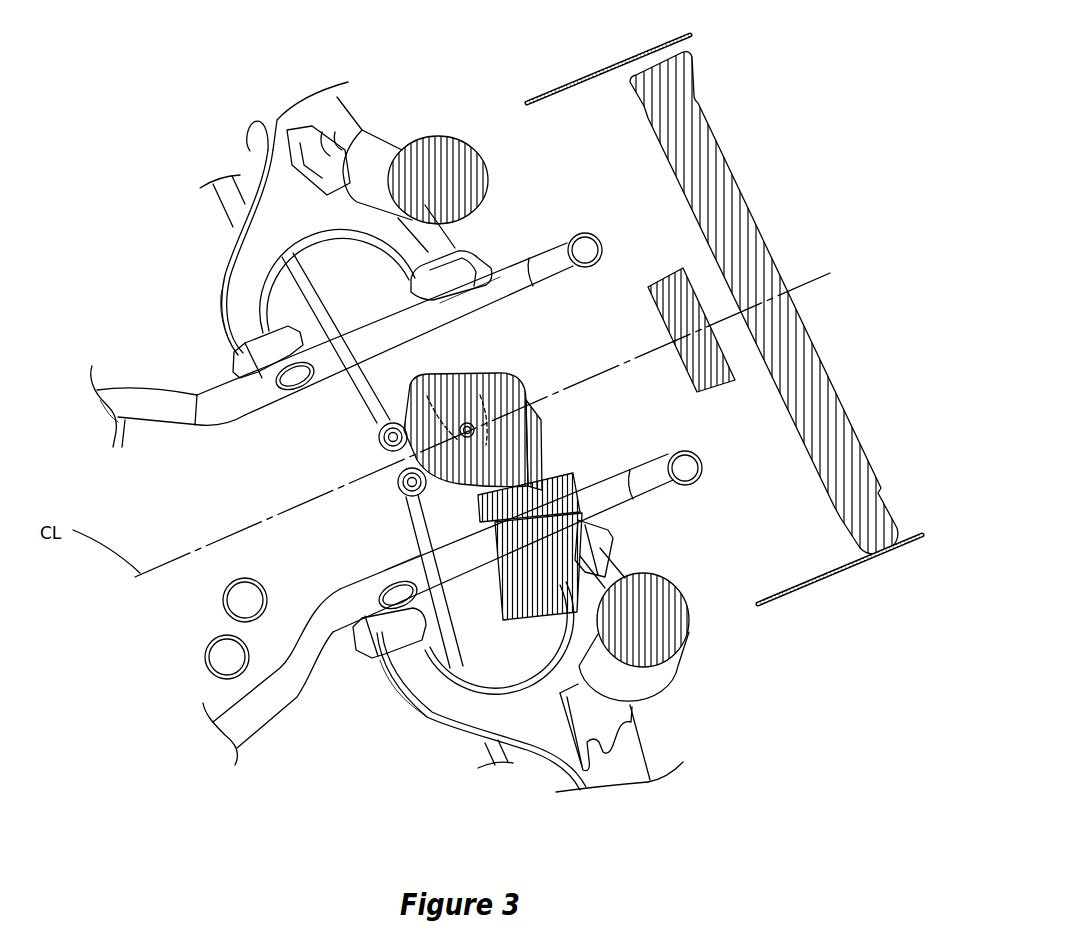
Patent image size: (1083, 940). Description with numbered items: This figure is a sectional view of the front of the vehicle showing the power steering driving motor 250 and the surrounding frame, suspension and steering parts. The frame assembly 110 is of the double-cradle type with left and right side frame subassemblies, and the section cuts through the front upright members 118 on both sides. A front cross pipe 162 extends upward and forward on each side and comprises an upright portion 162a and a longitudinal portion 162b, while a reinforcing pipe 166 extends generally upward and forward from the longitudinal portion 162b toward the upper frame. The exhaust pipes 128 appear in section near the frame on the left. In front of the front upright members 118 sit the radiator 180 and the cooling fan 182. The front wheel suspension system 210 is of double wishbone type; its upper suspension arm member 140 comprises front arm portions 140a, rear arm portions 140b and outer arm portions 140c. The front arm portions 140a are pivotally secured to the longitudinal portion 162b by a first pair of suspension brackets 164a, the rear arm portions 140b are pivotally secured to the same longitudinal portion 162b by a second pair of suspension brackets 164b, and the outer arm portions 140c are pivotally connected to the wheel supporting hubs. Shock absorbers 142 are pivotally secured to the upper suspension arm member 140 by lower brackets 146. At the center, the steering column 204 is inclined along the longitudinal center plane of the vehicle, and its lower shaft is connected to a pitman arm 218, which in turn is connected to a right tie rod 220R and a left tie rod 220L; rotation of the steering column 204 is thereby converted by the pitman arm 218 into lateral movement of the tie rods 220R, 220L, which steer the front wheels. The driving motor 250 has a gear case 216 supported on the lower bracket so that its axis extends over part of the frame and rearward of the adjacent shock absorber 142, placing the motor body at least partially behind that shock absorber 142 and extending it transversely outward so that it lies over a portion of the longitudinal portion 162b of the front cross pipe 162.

The frame assembly 110 is at (145, 372).
The front upright member 118 is at (585, 268).
The exhaust pipes 128 is at (206, 652).
The upper suspension arm member 140 is at (222, 225).
The front arm portions 140a is at (452, 240).
The rear arm portions 140b is at (222, 322).
The outer arm portions 140c is at (248, 150).
The shock absorbers 142 is at (413, 128).
The lower brackets 146 is at (307, 155).
The front cross pipe 162 is at (525, 301).
The upright portion 162a is at (128, 418).
The longitudinal portion 162b is at (475, 312).
The first pair of suspension brackets 164a is at (492, 268).
The second pair of suspension brackets 164b is at (228, 377).
The reinforcing pipe 166 is at (262, 408).
The radiator 180 is at (708, 128).
The cooling fan 182 is at (720, 350).
The steering column 204 is at (473, 430).
The front wheel suspension system 210 is at (228, 251).
The gear case 216 is at (477, 374).
The pitman arm 218 is at (421, 397).
The left tie rod 220L is at (322, 308).
The right tie rod 220R is at (468, 628).
The driving motor 250 is at (578, 470).